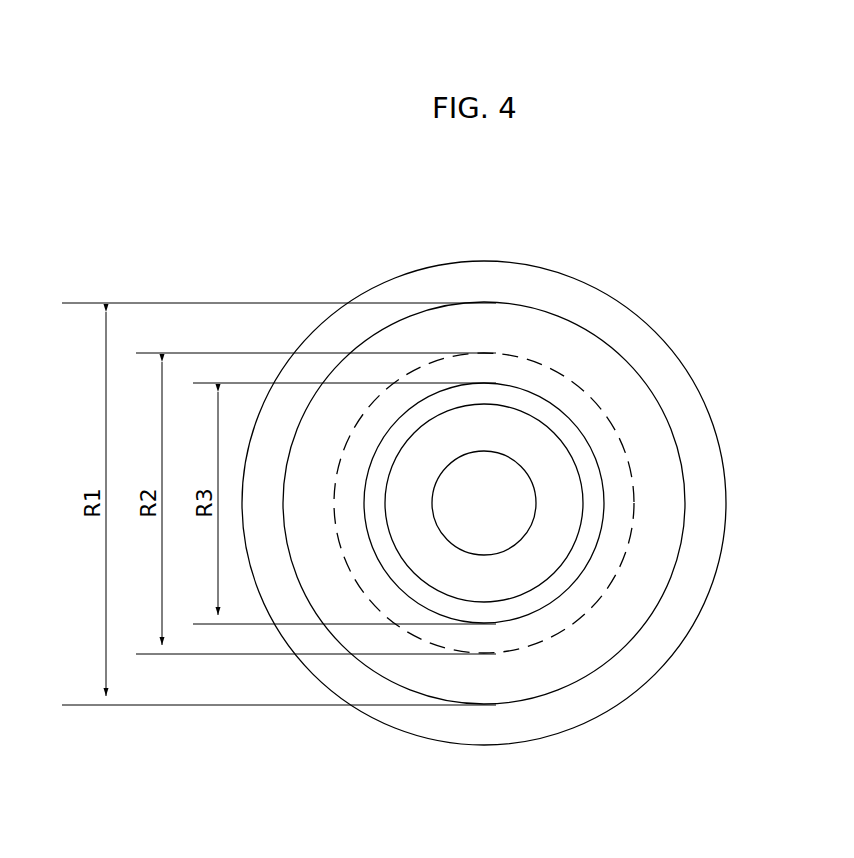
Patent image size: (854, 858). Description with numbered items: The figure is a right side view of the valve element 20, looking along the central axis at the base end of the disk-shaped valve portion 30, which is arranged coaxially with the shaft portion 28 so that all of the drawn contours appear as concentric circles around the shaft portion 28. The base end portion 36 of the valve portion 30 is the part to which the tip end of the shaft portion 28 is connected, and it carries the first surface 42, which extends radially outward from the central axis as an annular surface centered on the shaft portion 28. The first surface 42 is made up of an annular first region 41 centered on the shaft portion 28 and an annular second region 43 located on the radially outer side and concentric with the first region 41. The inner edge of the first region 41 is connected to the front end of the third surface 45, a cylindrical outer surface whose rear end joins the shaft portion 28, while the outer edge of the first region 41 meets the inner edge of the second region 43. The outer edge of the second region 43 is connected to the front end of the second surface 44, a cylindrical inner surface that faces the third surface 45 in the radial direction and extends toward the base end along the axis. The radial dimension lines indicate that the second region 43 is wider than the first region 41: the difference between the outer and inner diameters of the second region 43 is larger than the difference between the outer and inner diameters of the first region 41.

The rotor 20 is at (724, 284).
The shaft portion 28 is at (535, 492).
The valve portion 30 is at (594, 286).
The base end portion 36 is at (606, 700).
The first region 41 is at (603, 577).
The first surface 42 is at (654, 433).
The second region 43 is at (650, 572).
The second surface 44 is at (644, 379).
The third surface 45 is at (567, 593).